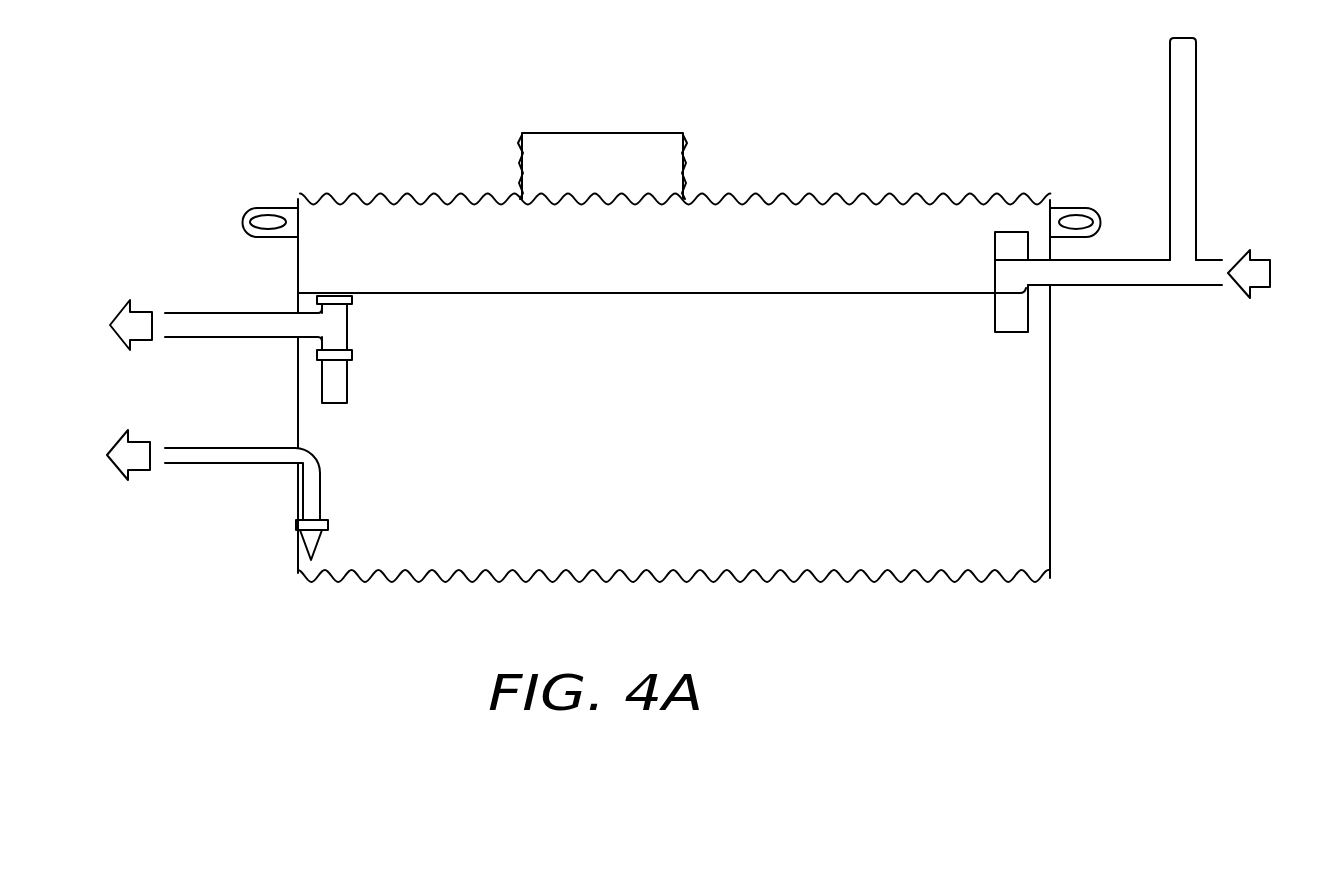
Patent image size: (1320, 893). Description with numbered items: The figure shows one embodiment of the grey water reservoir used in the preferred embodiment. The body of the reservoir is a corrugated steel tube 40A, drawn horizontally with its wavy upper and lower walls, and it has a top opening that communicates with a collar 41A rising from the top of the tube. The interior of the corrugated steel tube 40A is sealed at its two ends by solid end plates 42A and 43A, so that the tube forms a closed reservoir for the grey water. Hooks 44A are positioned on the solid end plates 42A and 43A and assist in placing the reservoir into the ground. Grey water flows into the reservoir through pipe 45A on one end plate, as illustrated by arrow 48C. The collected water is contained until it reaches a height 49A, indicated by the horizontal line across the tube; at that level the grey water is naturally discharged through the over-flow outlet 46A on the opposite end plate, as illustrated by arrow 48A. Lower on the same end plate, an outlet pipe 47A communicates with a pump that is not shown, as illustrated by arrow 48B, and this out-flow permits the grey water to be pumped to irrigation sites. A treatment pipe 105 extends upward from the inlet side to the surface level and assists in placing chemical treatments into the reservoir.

The corrugated steel tube 40A is at (828, 195).
The collar 41A is at (686, 152).
The solid end plate 42A is at (1052, 417).
The solid end plate 43A is at (296, 397).
The hooks 44A is at (268, 207).
The pipe 45A is at (1083, 287).
The over-flow outlet 46A is at (350, 325).
The outlet pipe 47A is at (322, 490).
The arrow 48A is at (150, 300).
The arrow 48B is at (150, 440).
The arrow 48C is at (1262, 240).
The height 49A is at (688, 292).
The treatment pipe 105 is at (1198, 82).